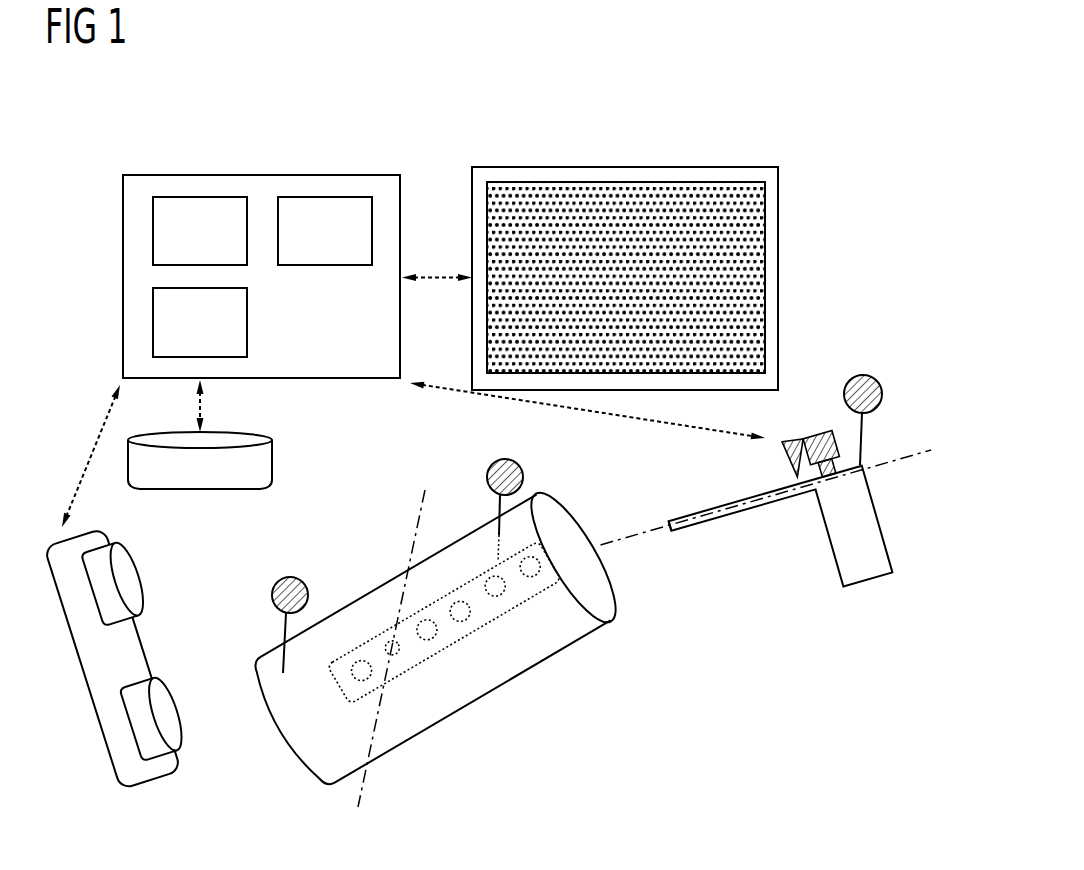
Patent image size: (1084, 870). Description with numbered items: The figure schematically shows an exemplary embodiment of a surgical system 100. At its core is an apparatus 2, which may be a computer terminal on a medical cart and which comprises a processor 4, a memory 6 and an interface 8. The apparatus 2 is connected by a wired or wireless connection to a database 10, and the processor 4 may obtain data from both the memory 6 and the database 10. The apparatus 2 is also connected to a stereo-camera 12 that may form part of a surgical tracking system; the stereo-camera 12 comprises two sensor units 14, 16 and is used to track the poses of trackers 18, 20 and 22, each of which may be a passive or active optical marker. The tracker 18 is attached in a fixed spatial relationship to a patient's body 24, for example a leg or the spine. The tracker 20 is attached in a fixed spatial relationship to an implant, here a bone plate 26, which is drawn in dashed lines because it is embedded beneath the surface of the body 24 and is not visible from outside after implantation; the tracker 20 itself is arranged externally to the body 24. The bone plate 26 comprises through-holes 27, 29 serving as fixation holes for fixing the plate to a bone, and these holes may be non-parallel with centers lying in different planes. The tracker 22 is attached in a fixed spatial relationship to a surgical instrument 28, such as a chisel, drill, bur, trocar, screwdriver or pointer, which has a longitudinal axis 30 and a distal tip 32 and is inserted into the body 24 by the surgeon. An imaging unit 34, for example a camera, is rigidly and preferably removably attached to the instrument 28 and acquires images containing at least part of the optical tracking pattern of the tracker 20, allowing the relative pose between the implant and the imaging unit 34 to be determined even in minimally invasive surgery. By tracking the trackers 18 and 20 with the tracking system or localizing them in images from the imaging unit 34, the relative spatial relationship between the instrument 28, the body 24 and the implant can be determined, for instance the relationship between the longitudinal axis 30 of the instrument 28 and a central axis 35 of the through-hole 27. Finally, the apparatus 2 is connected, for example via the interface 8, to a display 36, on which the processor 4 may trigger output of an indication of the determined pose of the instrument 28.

The surgical system 100 is at (801, 137).
The apparatus 2 is at (267, 174).
The processor 4 is at (153, 232).
The memory 6 is at (325, 197).
The interface 8 is at (153, 322).
The display 36 is at (682, 173).
The database 10 is at (262, 465).
The stereo-camera 12 is at (137, 648).
The sensor unit 14 is at (136, 579).
The sensor unit 16 is at (174, 710).
The tracker 18 is at (289, 577).
The tracker 20 is at (499, 460).
The tracker 22 is at (861, 376).
The patient's body 24 is at (417, 725).
The bone plate 26 is at (527, 590).
The through-hole 27 is at (400, 650).
The through-hole 29 is at (468, 613).
The longitudinal axis 30 is at (628, 538).
The surgical instrument 28 is at (873, 477).
The distal tip 32 is at (677, 533).
The imaging unit 34 is at (808, 440).
The central axis 35 is at (367, 778).